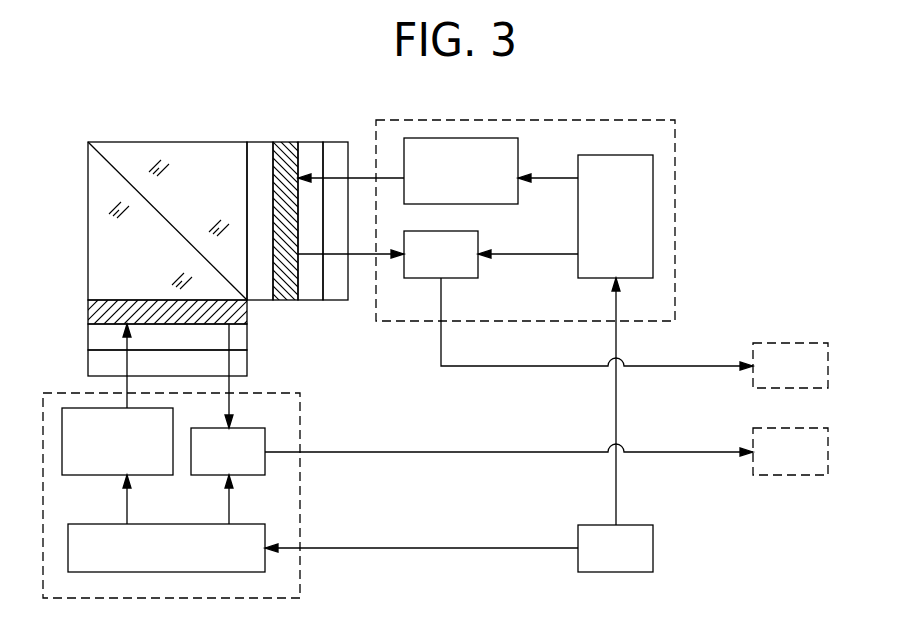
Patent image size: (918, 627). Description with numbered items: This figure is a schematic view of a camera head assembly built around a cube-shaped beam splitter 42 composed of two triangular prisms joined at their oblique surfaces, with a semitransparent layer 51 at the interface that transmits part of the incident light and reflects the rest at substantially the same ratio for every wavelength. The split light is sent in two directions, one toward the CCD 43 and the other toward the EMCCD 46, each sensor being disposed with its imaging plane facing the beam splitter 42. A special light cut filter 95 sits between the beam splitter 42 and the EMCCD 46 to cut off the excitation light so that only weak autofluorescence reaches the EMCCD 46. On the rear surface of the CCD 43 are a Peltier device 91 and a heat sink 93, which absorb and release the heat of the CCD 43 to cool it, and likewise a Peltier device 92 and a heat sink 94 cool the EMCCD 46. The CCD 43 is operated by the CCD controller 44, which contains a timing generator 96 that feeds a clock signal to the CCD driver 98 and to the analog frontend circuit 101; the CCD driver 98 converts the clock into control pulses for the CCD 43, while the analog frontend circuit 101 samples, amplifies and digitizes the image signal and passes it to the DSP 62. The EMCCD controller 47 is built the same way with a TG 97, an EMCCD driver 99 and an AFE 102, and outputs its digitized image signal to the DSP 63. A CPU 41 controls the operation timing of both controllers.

The CPU 41 is at (654, 548).
The beam splitter 42 is at (137, 148).
The CCD 43 is at (95, 313).
The CCD controller 44 is at (302, 578).
The EMCCD 46 is at (289, 150).
The EMCCD controller 47 is at (677, 126).
The semitransparent layer 51 is at (120, 175).
The DSP 62 is at (777, 475).
The DSP 63 is at (776, 343).
The Peltier device 91 is at (100, 340).
The Peltier device 92 is at (310, 150).
The heat sink 93 is at (243, 364).
The heat sink 94 is at (338, 150).
The special light cut filter 95 is at (260, 150).
The timing generator 96 is at (149, 524).
The TG 97 is at (655, 208).
The CCD driver 98 is at (174, 428).
The EMCCD driver 99 is at (519, 156).
The analog frontend circuit 101 is at (251, 428).
The AFE 102 is at (479, 242).